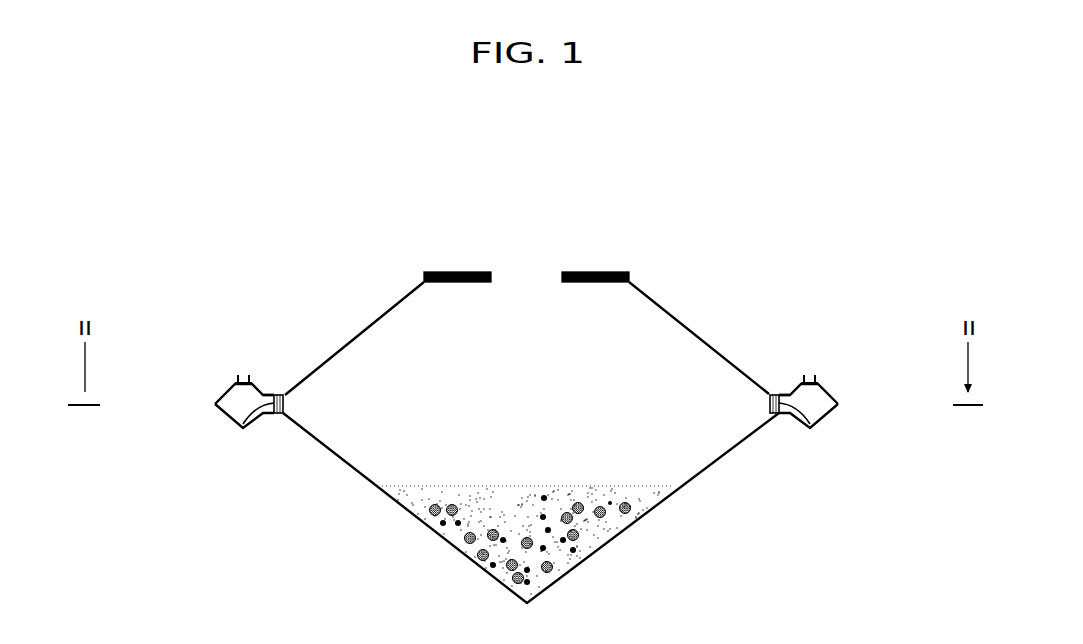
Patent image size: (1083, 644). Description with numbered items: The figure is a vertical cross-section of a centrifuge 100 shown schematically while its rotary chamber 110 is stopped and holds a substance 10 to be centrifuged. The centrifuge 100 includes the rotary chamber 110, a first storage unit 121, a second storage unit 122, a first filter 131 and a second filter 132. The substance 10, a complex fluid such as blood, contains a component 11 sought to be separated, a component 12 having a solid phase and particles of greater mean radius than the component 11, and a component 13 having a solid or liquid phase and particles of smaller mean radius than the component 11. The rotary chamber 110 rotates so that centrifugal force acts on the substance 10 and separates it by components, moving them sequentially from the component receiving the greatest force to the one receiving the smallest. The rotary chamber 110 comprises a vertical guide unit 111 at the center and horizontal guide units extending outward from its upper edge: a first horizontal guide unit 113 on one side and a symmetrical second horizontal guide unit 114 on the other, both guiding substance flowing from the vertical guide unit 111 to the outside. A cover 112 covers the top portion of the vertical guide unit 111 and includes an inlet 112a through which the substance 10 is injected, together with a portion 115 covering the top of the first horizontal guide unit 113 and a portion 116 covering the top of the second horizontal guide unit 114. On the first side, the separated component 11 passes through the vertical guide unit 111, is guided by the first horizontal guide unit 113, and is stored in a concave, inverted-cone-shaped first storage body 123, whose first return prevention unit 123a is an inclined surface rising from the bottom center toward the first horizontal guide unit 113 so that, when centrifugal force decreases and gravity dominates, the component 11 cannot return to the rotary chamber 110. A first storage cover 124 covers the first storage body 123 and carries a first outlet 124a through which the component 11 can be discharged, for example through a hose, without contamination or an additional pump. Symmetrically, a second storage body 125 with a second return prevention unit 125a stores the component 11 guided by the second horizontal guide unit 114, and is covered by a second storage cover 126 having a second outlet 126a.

The centrifuge 100 is at (760, 208).
The rotary chamber 110 is at (585, 368).
The vertical guide unit 111 is at (694, 480).
The cover 112 is at (684, 328).
The inlet 112a is at (527, 275).
The first horizontal guide unit 113 is at (285, 403).
The second horizontal guide unit 114 is at (769, 405).
The portion of the cover covering the first horizontal guide unit 115 is at (270, 393).
The portion of the cover covering the second horizontal guide unit 116 is at (782, 393).
The first storage unit 121 is at (157, 367).
The second storage unit 122 is at (897, 368).
The first storage body 123 is at (224, 416).
The first return prevention unit 123a is at (257, 423).
The first storage cover 124 is at (232, 388).
The first outlet 124a is at (245, 375).
The second storage body 125 is at (829, 416).
The second return prevention unit 125a is at (798, 418).
The second storage cover 126 is at (821, 388).
The second outlet 126a is at (808, 375).
The first filter 131 is at (242, 428).
The second filter 132 is at (813, 420).
The substance 10 is at (412, 507).
The component sought to be separated 11 is at (578, 539).
The component having a solid phase with larger particles 12 is at (456, 525).
The component having a solid or liquid phase with smaller particles 13 is at (643, 498).